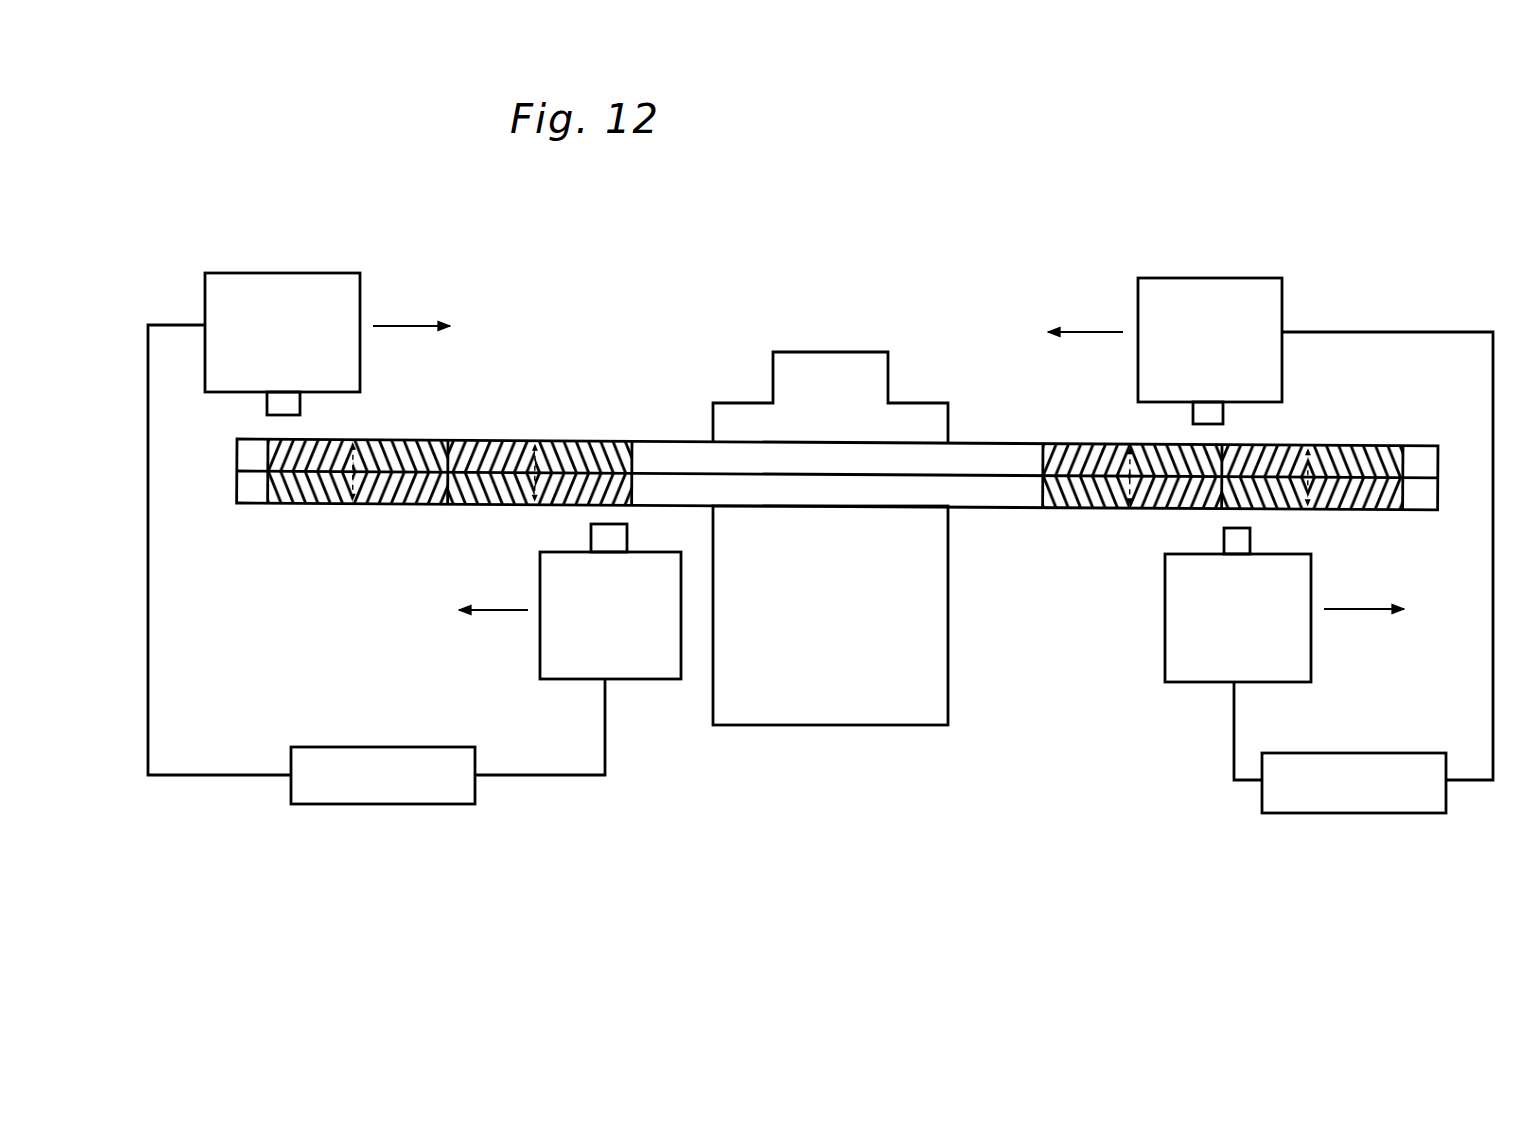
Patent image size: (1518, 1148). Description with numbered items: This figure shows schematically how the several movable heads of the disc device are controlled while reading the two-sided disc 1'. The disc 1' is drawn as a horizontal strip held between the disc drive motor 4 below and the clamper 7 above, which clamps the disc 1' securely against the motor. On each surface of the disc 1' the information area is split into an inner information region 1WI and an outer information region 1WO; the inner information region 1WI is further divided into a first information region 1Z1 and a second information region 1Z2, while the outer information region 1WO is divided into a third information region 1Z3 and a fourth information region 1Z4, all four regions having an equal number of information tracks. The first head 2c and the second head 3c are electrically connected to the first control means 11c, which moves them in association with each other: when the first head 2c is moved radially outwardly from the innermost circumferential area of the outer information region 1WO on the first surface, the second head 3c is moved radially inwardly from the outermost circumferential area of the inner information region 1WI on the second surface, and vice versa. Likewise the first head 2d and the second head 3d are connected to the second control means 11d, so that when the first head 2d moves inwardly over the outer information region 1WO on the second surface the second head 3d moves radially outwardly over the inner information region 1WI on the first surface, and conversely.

The disc 1' is at (847, 432).
The inner information region 1WI is at (718, 332).
The outer information region 1WO is at (523, 388).
The first information region 1Z1 is at (583, 443).
The second information region 1Z2 is at (522, 442).
The third information region 1Z3 is at (425, 446).
The fourth information region 1Z4 is at (334, 446).
The first head 2c is at (1195, 627).
The first head 2d is at (293, 284).
The second head 3c is at (1200, 293).
The second head 3d is at (627, 648).
The disc drive motor 4 is at (828, 686).
The clamper 7 is at (818, 363).
The first control means 11c is at (1336, 815).
The second control means 11d is at (394, 805).